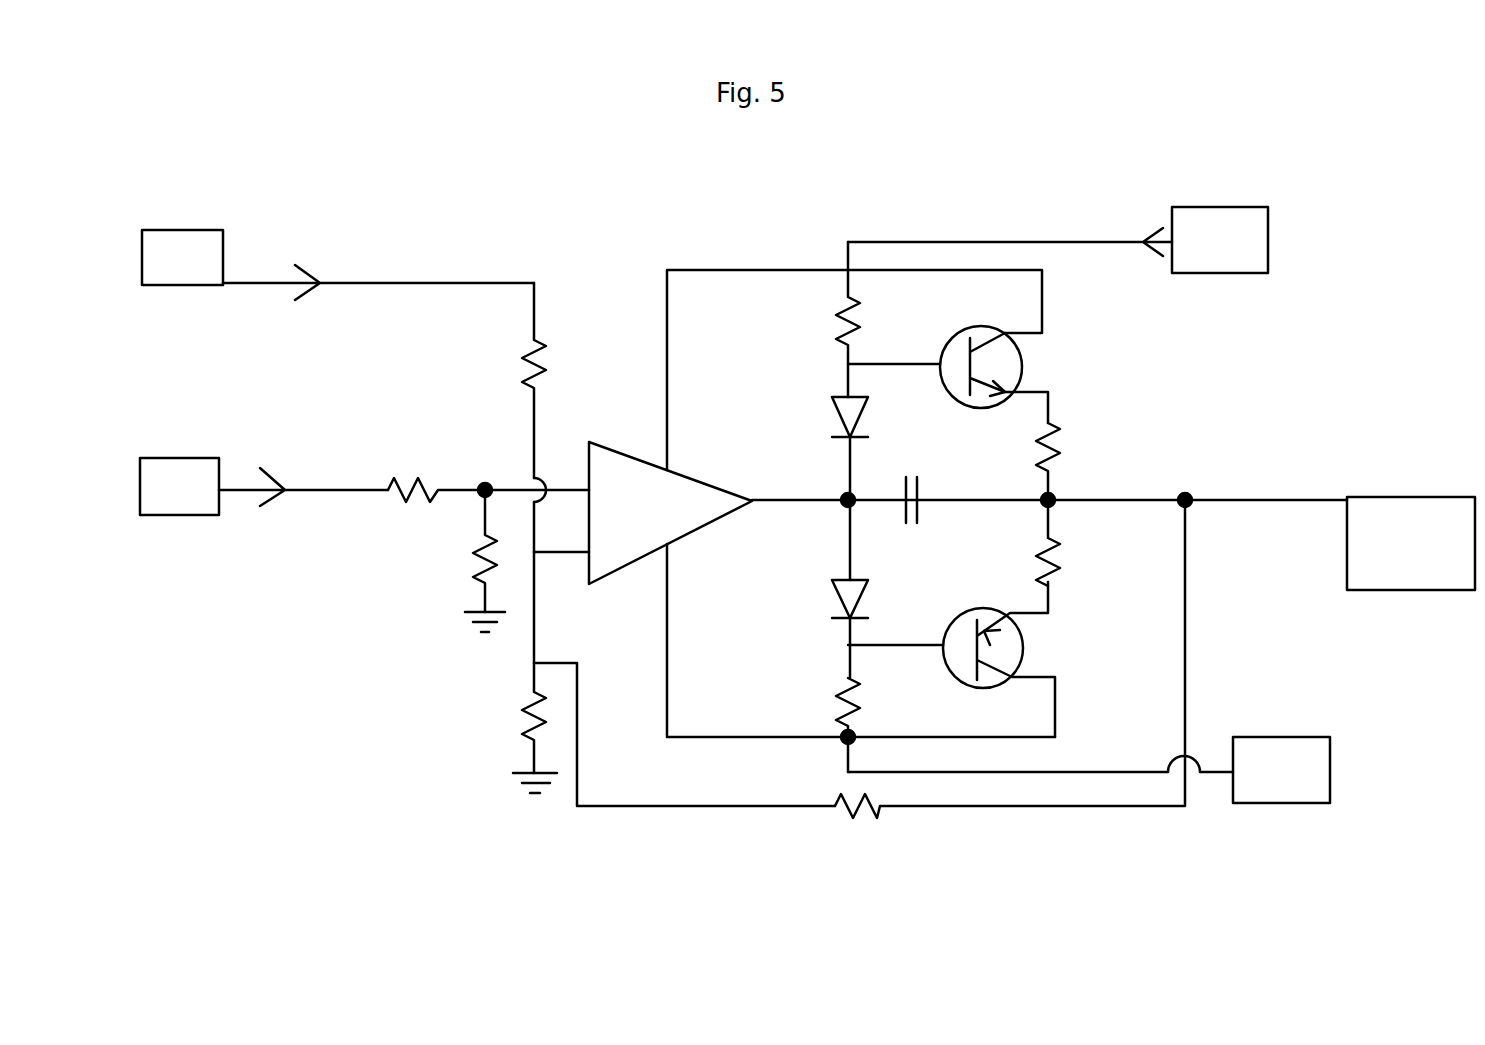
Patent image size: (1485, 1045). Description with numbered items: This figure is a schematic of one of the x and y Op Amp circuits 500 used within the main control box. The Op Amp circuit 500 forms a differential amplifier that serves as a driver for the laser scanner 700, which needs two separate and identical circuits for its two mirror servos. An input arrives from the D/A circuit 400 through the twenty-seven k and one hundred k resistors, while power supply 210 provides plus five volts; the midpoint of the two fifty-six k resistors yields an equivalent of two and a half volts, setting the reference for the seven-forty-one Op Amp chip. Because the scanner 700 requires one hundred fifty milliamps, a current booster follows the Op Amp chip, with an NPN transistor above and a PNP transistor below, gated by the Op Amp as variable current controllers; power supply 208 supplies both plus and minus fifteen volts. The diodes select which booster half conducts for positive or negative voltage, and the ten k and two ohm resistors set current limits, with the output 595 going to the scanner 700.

The Op Amp circuit 500 is at (530, 160).
The power supply 210 is at (204, 273).
The D/A circuit 400 is at (158, 502).
The power supply 208 is at (1200, 258).
The output signal (x and y) 595 is at (1285, 497).
The laser scanner 700 is at (1405, 545).